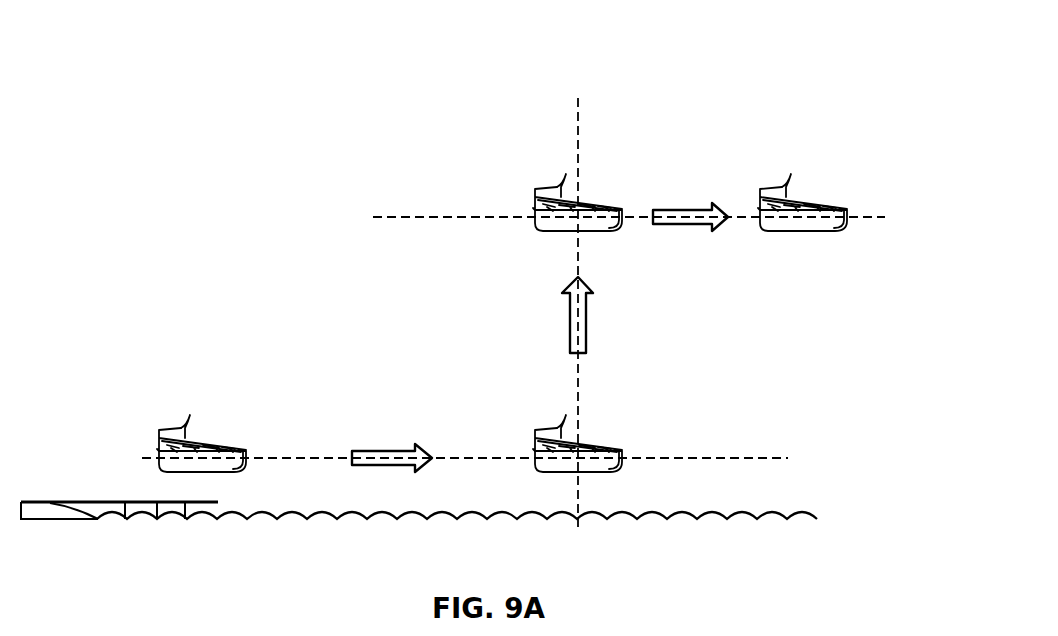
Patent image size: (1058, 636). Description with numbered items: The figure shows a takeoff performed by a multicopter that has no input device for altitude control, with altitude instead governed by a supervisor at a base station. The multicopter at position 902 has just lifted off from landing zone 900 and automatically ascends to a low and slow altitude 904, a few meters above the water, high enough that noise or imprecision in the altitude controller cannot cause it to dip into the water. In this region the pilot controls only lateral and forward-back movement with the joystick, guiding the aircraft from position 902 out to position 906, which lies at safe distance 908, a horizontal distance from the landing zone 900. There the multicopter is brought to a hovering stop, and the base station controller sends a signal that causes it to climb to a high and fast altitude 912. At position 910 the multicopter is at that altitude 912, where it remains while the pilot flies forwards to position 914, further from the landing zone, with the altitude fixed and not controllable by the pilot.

The landing zone 900 is at (103, 502).
The multicopter position 902 is at (183, 425).
The low and slow altitude 904 is at (770, 419).
The multicopter position 906 is at (555, 424).
The safe distance 908 is at (579, 275).
The multicopter position 910 is at (554, 183).
The high and fast altitude 912 is at (398, 217).
The multicopter position 914 is at (781, 184).